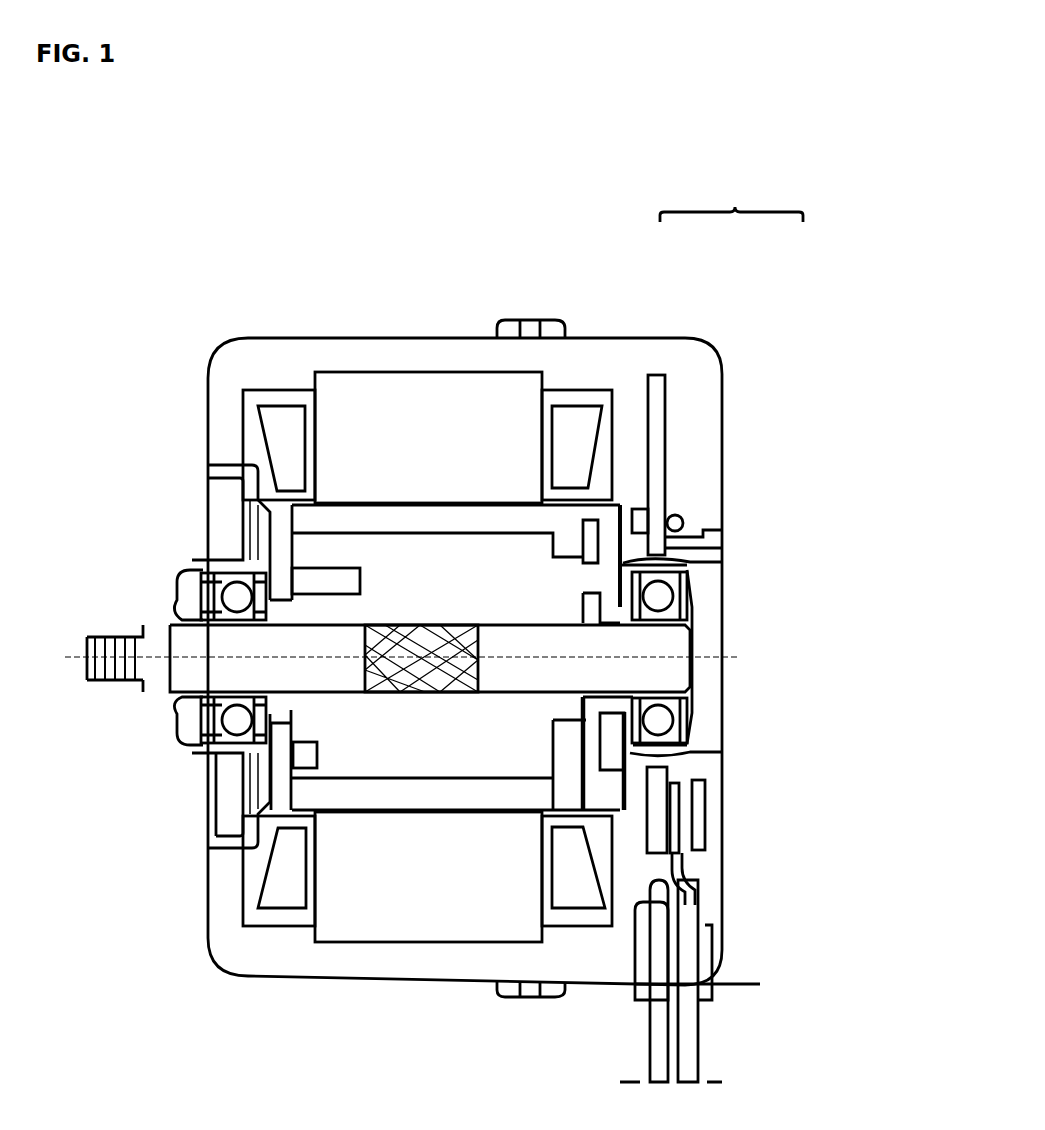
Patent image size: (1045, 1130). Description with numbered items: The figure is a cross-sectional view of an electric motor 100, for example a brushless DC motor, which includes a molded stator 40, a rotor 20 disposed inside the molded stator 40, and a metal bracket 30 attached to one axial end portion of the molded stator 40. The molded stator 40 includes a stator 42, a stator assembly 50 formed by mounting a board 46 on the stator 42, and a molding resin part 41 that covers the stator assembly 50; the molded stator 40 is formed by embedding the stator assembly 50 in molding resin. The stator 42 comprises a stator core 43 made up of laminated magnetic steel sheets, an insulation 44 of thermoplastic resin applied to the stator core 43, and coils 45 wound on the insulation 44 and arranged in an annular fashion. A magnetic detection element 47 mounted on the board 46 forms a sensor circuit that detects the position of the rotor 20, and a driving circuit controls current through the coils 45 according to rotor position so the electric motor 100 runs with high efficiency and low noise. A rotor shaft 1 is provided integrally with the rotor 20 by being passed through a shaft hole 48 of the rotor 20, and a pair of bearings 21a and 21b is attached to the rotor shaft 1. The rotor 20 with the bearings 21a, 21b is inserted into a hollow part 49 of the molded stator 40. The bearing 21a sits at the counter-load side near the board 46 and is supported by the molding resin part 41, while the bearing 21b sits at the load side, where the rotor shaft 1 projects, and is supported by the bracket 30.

The rotor shaft 1 is at (160, 682).
The rotor 20 is at (355, 560).
The bearing 21a is at (698, 585).
The bearing 21b is at (215, 573).
The bracket 30 is at (200, 748).
The molded stator 40 is at (338, 336).
The molding resin part 41 is at (410, 352).
The stator 42 is at (520, 372).
The stator core 43 is at (392, 915).
The insulation 44 is at (290, 915).
The coils 45 is at (275, 872).
The board 46 is at (665, 400).
The magnetic detection element 47 is at (648, 512).
The shaft hole 48 is at (288, 717).
The hollow part 49 is at (280, 513).
The stator assembly 50 is at (735, 207).
The electric motor 100 is at (880, 355).